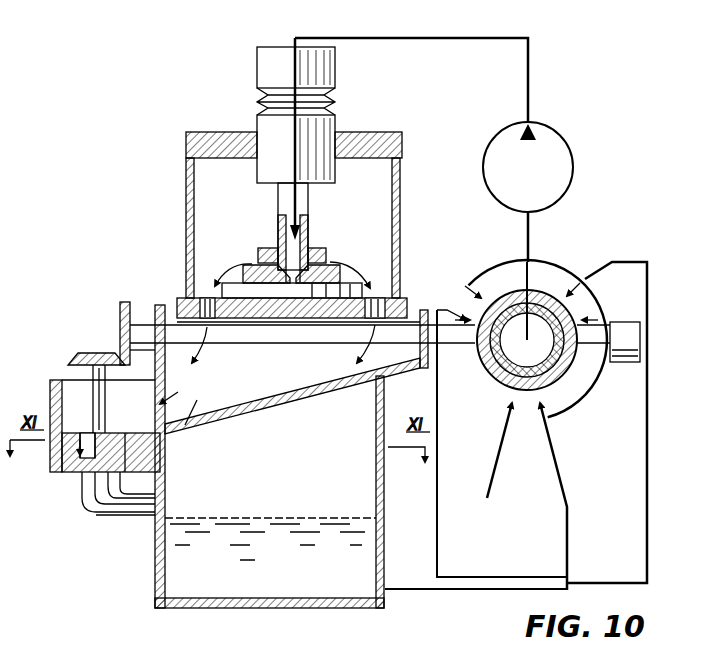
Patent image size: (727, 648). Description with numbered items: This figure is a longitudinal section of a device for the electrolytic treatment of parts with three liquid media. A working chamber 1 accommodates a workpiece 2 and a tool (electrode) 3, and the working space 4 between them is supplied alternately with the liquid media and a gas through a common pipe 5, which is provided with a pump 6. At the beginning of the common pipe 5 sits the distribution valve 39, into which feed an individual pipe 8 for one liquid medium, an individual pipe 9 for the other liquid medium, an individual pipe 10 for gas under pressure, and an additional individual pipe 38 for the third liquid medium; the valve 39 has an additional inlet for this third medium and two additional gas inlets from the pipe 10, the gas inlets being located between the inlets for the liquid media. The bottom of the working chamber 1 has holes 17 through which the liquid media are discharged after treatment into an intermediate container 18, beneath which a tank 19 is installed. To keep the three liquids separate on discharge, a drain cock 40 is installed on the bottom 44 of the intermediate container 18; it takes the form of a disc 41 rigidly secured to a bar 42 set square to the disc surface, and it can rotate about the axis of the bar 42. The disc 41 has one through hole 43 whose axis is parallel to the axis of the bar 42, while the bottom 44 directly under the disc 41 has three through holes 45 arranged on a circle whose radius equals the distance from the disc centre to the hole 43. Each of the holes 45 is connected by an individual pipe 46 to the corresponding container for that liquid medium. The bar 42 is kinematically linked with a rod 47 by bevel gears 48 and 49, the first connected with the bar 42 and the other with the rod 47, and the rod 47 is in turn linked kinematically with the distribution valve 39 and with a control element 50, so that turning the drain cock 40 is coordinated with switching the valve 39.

The working chamber 1 is at (200, 180).
The workpiece 2 is at (333, 268).
The tool (electrode) 3 is at (316, 250).
The working space 4 is at (222, 300).
The common pipe 5 is at (528, 90).
The pump 6 is at (562, 140).
The individual pipe for one liquid medium 8 is at (560, 445).
The individual pipe for the other liquid medium 9 is at (440, 432).
The individual pipe for gas 10 is at (497, 470).
The holes 17 is at (372, 300).
The intermediate container 18 is at (166, 428).
The tank 19 is at (380, 502).
The additional individual pipe 38 is at (612, 260).
The valve 39 is at (550, 282).
The drain cock 40 is at (112, 425).
The disc 41 is at (62, 470).
The bar 42 is at (82, 372).
The through hole 43 is at (80, 482).
The bottom 44 is at (140, 480).
The through holes 45 is at (110, 500).
The individual pipe 46 is at (136, 508).
The rod 47 is at (262, 335).
The bevel gear 48 is at (92, 356).
The bevel gear 49 is at (125, 302).
The control element 50 is at (616, 362).